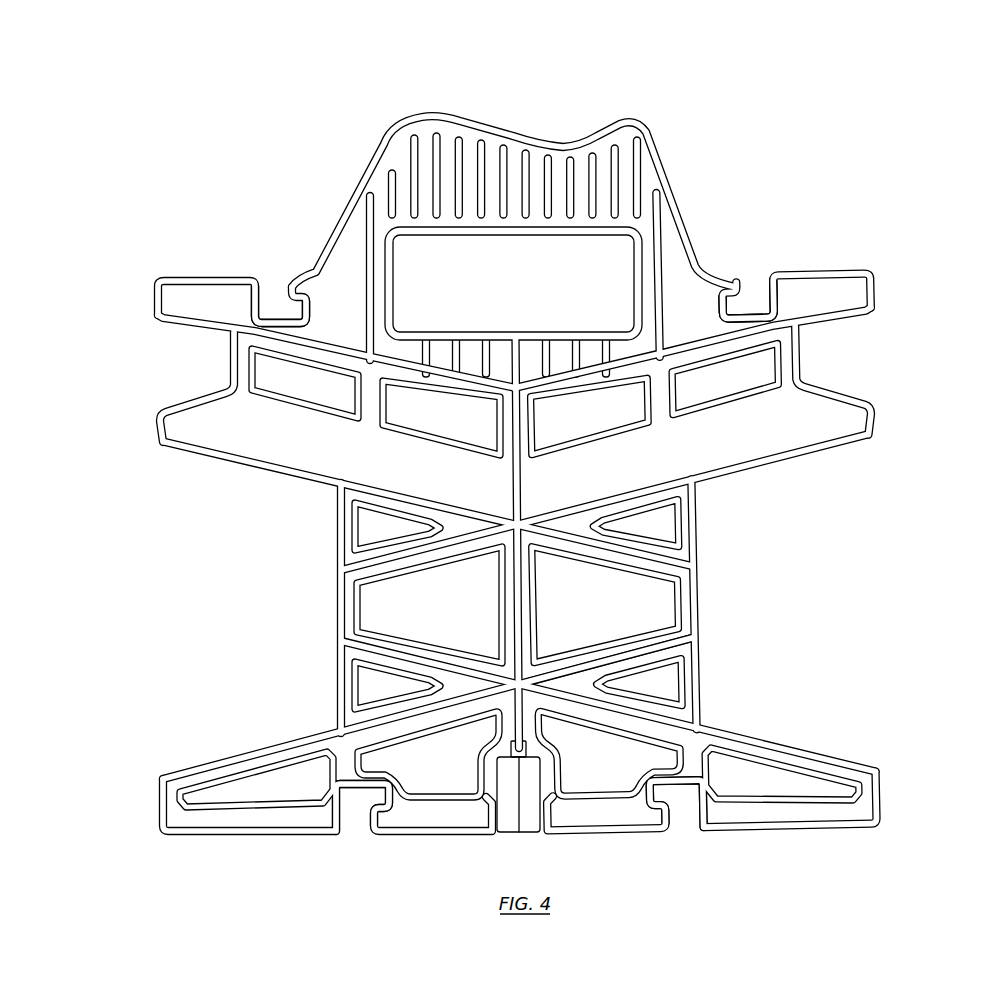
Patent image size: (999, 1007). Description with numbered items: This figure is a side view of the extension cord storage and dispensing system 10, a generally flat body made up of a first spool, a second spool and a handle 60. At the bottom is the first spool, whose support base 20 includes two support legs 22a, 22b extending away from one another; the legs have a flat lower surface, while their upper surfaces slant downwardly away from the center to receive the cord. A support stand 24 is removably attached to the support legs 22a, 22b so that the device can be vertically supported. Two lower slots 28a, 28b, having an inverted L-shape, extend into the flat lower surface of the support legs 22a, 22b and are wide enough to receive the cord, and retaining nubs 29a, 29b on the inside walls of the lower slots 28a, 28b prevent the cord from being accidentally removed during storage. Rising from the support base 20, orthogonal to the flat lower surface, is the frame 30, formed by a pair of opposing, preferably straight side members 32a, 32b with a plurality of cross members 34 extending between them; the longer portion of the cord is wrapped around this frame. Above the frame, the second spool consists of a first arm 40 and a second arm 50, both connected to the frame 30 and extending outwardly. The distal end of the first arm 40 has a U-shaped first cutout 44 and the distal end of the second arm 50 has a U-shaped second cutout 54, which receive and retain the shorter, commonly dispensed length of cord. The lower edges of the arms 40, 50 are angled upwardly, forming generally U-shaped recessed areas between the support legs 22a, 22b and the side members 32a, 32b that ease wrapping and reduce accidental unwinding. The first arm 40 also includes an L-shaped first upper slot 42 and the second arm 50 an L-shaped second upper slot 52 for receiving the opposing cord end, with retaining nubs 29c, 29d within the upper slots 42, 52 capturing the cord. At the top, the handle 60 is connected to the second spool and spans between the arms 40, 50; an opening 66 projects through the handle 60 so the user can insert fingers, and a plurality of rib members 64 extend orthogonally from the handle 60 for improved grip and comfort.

The extension cord storage and dispensing system 10 is at (553, 462).
The support base 20 is at (546, 764).
The support leg 22a is at (227, 760).
The support leg 22b is at (836, 752).
The support stand 24 is at (500, 840).
The lower slot 28a is at (367, 823).
The lower slot 28b is at (672, 822).
The retaining nub 29a is at (342, 822).
The retaining nub 29b is at (698, 813).
The retaining nub 29c is at (767, 283).
The retaining nub 29d is at (262, 292).
The frame 30 is at (697, 556).
The side member 32a is at (343, 592).
The side member 32b is at (700, 594).
The cross member 34 is at (700, 655).
The first arm 40 is at (872, 271).
The first upper slot 42 is at (745, 270).
The first cutout 44 is at (836, 395).
The second arm 50 is at (208, 274).
The second upper slot 52 is at (285, 277).
The second cutout 54 is at (192, 400).
The handle 60 is at (645, 124).
The rib member 64 is at (548, 162).
The opening 66 is at (633, 248).